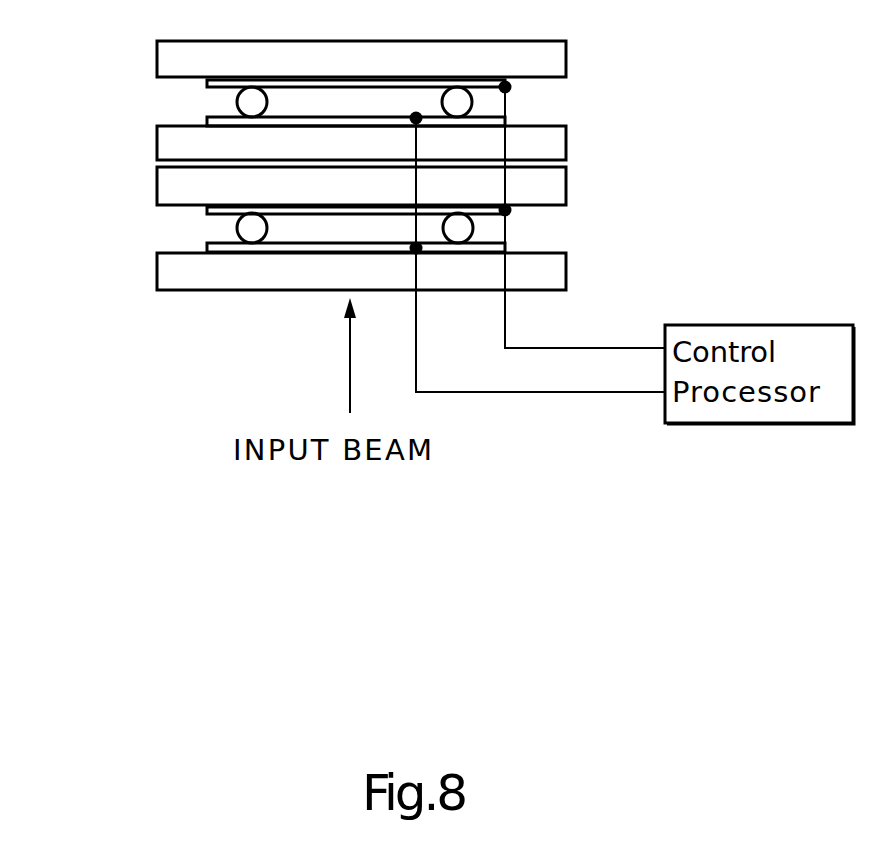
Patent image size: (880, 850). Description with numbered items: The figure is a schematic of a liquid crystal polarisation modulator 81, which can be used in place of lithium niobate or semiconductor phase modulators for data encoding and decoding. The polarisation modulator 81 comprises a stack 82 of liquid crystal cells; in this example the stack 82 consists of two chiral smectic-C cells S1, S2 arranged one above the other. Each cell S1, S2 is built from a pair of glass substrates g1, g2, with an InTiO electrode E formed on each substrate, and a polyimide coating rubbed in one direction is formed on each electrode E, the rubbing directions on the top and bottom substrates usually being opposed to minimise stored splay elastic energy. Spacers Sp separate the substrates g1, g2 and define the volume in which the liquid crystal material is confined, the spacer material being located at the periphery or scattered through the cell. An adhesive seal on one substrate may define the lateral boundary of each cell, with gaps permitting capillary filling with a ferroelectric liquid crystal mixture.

The stack of liquid crystal cells 82 is at (433, 213).
The polarisation modulator 81 is at (557, 470).
The chiral smectic-C cell S2 is at (371, 126).
The chiral smectic-C cell S1 is at (374, 247).
The glass substrate g1 is at (157, 143).
The glass substrate g2 is at (157, 263).
The InTiO electrode E is at (207, 207).
The spacers Sp is at (252, 230).